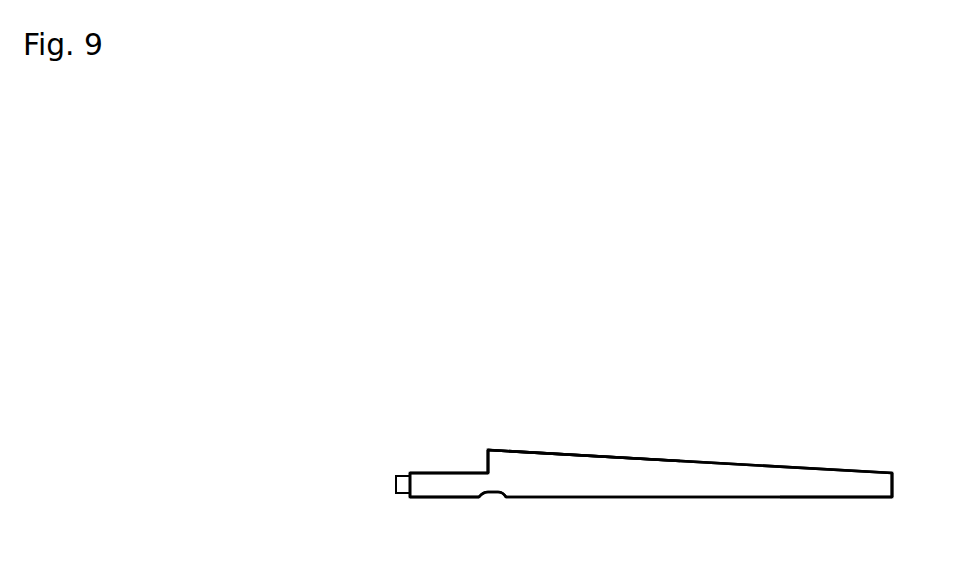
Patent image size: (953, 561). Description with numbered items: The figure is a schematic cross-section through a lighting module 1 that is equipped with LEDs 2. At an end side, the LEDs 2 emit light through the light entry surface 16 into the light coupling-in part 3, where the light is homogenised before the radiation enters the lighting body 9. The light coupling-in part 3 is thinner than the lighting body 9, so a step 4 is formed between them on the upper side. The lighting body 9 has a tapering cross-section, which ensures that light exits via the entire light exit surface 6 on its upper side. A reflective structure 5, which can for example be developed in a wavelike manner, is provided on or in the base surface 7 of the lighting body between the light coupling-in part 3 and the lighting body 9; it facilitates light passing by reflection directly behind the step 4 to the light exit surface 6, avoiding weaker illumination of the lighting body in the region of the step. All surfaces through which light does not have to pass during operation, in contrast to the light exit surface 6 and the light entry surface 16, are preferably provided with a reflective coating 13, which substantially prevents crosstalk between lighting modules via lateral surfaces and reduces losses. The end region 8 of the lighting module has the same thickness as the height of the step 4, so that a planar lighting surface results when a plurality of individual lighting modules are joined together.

The lighting module 1 is at (811, 425).
The LEDs 2 is at (397, 484).
The light coupling-in part 3 is at (446, 478).
The step 4 is at (474, 441).
The reflective structure 5 is at (487, 499).
The light exit surface 6 is at (701, 463).
The base surface 7 is at (618, 499).
The end region 8 is at (877, 479).
The lighting body 9 is at (574, 465).
The reflective coating 13 is at (425, 468).
The light entry surface 16 is at (414, 499).